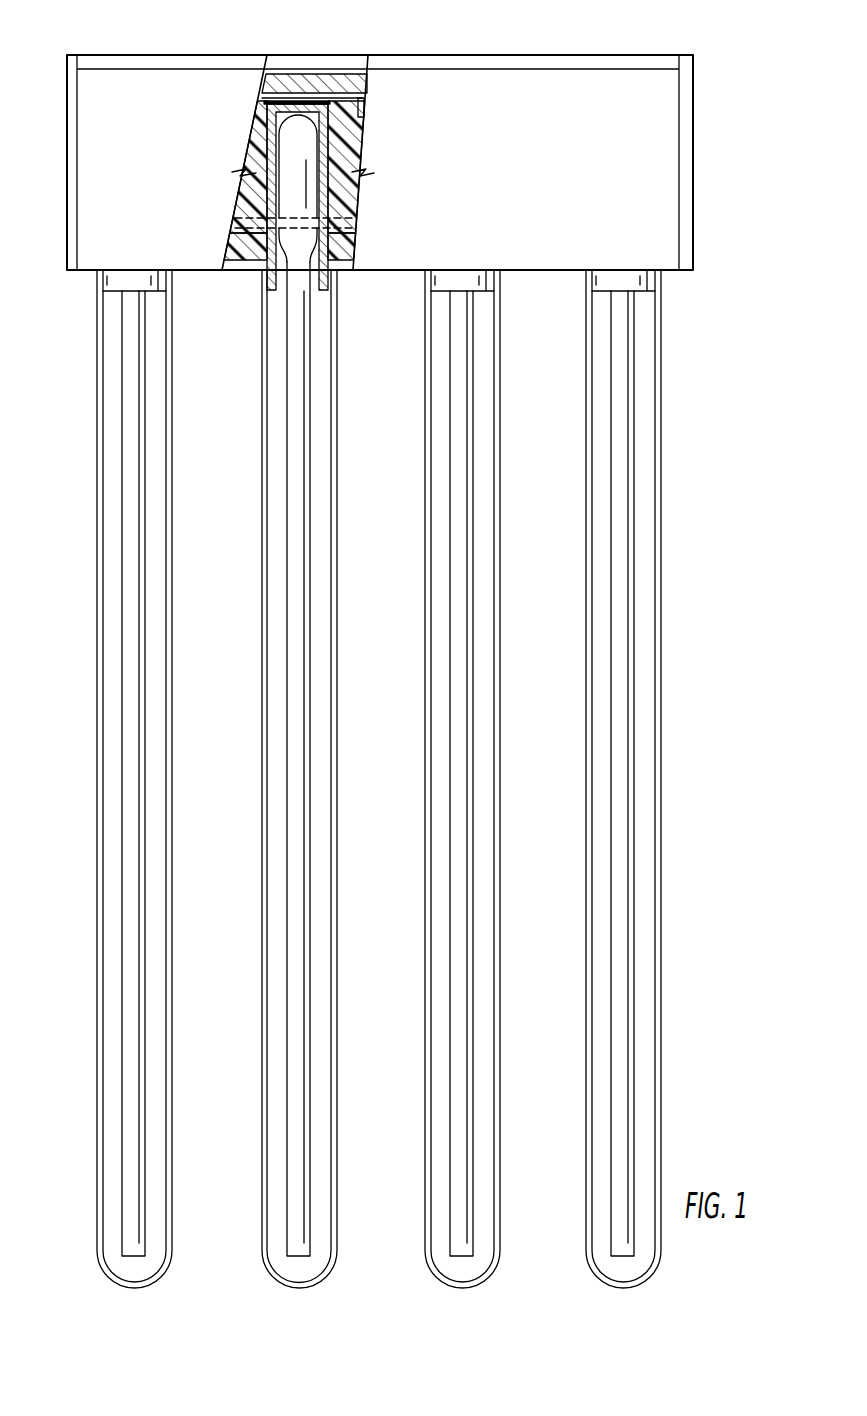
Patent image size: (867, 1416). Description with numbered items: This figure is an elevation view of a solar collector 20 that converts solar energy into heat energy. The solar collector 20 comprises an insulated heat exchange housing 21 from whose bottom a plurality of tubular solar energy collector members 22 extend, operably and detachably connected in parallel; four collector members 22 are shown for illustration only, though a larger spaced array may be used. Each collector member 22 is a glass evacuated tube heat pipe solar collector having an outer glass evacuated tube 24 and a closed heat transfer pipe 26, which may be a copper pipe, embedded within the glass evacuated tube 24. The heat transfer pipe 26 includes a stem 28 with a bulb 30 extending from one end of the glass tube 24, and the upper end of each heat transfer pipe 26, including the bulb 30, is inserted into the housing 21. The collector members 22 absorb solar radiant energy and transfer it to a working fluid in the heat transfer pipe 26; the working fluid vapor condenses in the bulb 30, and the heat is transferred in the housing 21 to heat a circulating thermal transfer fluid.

The solar collector 20 is at (670, 365).
The heat exchange housing 21 is at (630, 177).
The tubular solar energy collector member 22 is at (101, 503).
The glass evacuated tube 24 is at (97, 594).
The heat transfer pipe 26 is at (134, 635).
The stem 28 is at (272, 278).
The bulb 30 is at (297, 130).